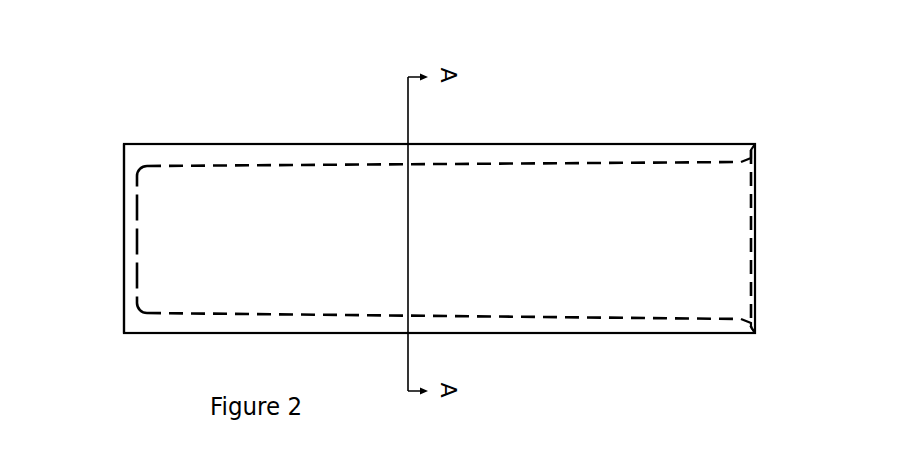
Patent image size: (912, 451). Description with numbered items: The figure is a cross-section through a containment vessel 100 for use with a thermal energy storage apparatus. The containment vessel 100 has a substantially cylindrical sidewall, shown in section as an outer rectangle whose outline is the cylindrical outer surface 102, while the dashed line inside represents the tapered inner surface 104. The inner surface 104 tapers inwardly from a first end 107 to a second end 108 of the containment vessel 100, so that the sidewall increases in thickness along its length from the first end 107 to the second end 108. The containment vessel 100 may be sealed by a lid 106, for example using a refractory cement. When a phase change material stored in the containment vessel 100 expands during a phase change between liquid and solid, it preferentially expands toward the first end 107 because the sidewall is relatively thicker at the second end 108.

The containment vessel 100 is at (603, 88).
The cylindrical outer surface 102 is at (203, 144).
The tapered inner surface 104 is at (165, 168).
The lid 106 is at (755, 250).
The first end 107 is at (755, 330).
The second end 108 is at (124, 303).